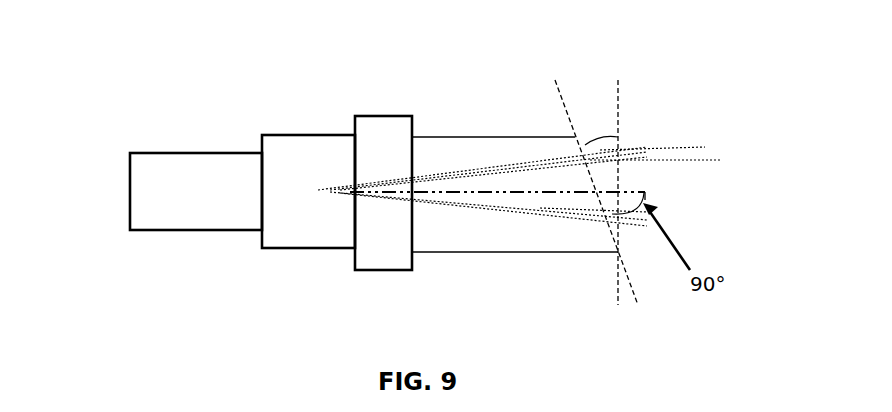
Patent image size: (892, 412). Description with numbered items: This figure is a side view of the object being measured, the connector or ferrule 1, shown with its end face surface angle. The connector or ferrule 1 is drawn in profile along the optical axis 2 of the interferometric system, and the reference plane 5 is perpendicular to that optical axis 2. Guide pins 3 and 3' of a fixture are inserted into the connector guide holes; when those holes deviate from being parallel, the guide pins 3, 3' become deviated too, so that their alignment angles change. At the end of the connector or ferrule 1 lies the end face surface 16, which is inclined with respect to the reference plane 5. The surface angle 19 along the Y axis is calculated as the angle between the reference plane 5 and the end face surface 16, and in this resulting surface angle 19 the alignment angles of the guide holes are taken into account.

The connector or ferrule 1 is at (172, 113).
The optical axis 2 is at (607, 190).
The guide pin 3 is at (519, 125).
The guide pin 3' is at (488, 246).
The reference plane 5 is at (620, 93).
The end face surface 16 is at (558, 93).
The surface angle 19 is at (598, 128).